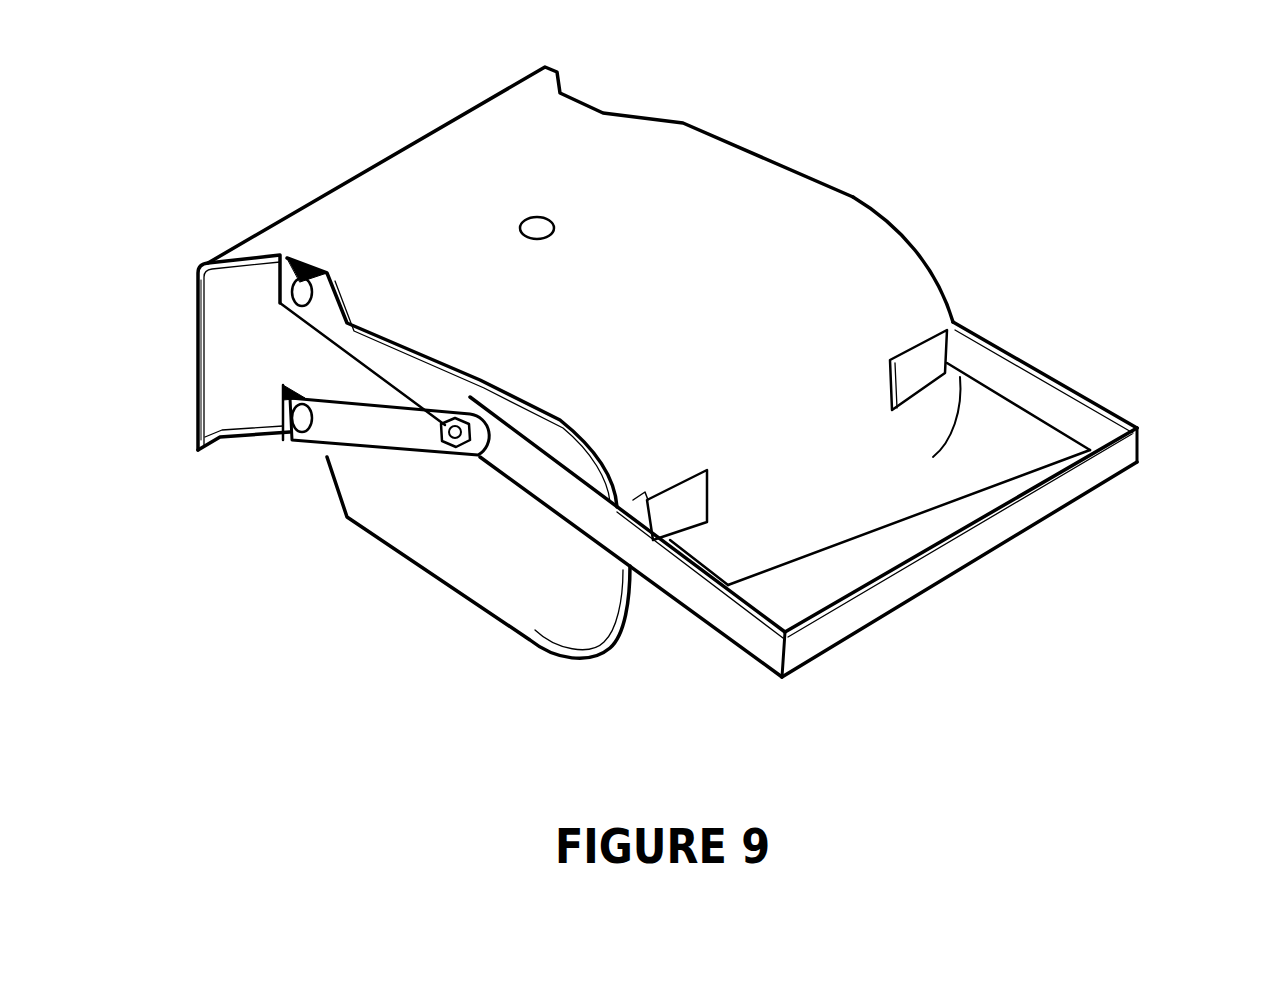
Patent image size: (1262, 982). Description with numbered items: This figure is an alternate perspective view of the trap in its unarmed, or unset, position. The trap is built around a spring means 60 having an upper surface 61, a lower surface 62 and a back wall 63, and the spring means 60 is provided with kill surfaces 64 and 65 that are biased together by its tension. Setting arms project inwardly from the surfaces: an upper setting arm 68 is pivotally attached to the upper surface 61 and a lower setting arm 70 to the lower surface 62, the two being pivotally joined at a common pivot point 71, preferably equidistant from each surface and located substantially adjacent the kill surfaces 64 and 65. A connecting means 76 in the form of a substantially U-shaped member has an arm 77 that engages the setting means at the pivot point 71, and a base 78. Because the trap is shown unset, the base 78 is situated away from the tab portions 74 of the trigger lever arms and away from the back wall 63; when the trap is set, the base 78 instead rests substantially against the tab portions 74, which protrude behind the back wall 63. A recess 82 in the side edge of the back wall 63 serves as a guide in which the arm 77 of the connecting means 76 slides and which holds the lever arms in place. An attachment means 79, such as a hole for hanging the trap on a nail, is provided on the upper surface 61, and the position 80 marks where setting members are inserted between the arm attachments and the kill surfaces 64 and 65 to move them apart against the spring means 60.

The spring means 60 is at (924, 214).
The upper surface 61 is at (752, 193).
The lower surface 62 is at (573, 630).
The back wall 63 is at (785, 385).
The kill surface 64 is at (207, 261).
The kill surface 65 is at (217, 443).
The setting arm 68 is at (365, 350).
The setting arm 70 is at (380, 435).
The pivot point 71 is at (447, 452).
The tab portion 74 is at (708, 508).
The connecting means 76 is at (1155, 447).
The arm 77 is at (694, 598).
The base 78 is at (937, 563).
The attachment means 79 is at (533, 222).
The position 80 is at (231, 302).
The recess 82 is at (580, 76).